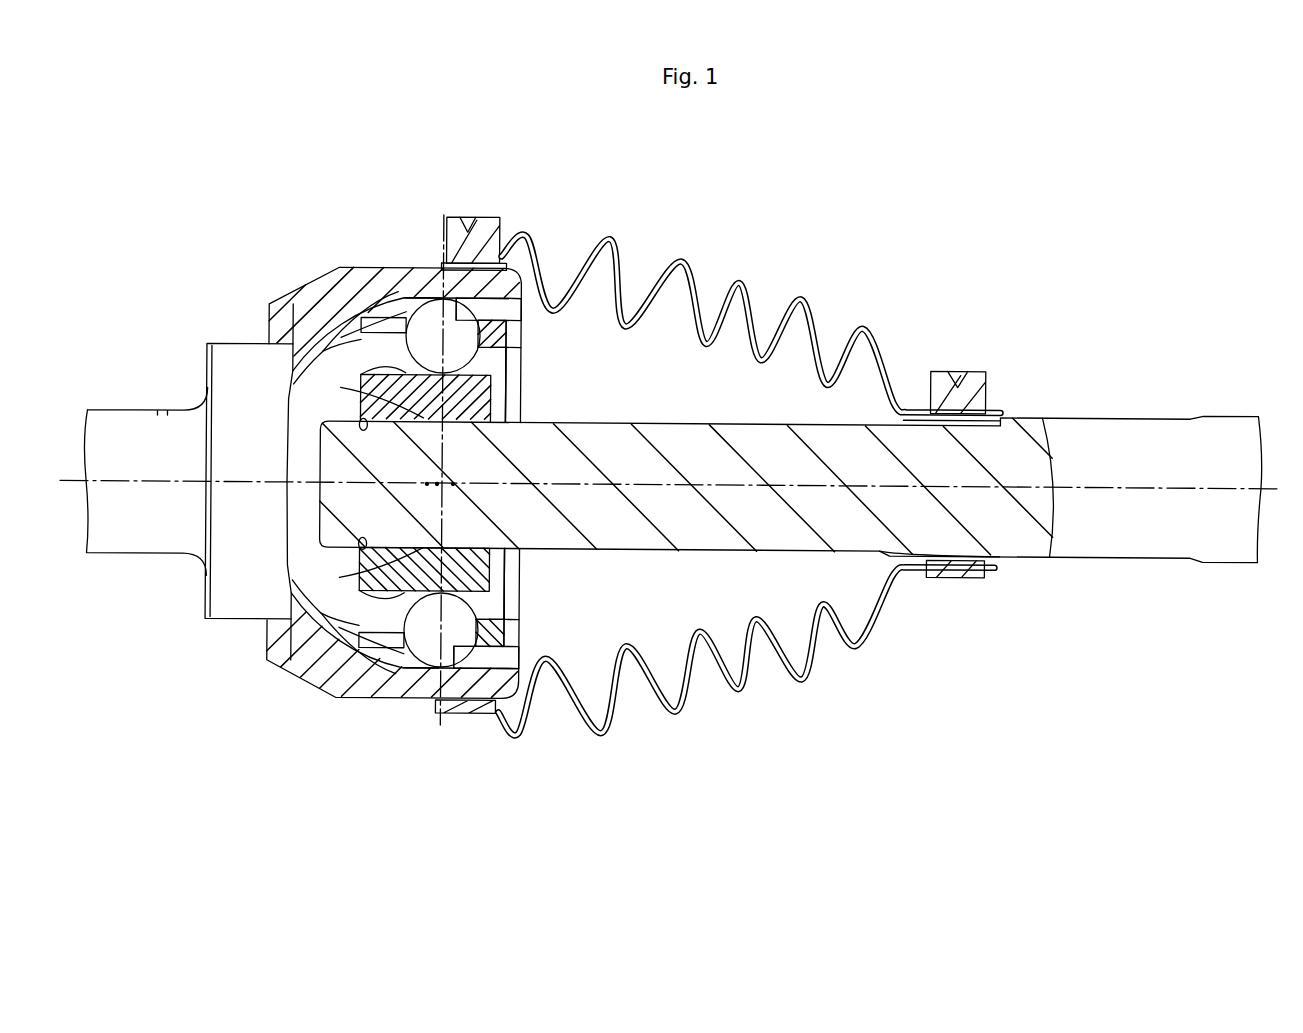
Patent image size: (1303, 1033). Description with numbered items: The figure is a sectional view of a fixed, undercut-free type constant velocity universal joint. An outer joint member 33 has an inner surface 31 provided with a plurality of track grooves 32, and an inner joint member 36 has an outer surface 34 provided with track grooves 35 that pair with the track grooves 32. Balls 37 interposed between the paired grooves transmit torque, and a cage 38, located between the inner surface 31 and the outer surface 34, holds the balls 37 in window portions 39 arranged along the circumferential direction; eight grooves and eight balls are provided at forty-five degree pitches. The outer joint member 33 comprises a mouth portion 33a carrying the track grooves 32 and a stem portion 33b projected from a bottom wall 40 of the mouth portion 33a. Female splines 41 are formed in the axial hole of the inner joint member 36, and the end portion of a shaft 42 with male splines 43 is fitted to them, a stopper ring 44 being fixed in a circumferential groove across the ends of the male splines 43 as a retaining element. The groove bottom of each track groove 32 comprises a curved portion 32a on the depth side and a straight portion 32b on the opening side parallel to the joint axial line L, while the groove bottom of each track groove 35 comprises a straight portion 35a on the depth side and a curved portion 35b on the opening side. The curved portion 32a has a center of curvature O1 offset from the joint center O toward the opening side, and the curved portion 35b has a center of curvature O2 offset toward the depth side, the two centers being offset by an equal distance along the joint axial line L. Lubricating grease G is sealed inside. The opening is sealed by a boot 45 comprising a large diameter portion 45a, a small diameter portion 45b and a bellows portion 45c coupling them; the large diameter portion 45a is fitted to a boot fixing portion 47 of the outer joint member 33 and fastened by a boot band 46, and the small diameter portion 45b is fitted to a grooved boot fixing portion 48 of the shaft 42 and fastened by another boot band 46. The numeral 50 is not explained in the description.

The inner surface 31 is at (428, 325).
The track grooves 32 is at (494, 668).
The curved portion 32a is at (348, 697).
The straight portion 32b is at (500, 714).
The outer joint member 33 is at (357, 262).
The mouth portion 33a is at (348, 268).
The stem portion 33b is at (122, 428).
The outer surface 34 is at (395, 690).
The track grooves 35 is at (500, 595).
The straight portion 35a is at (335, 560).
The curved portion 35b is at (520, 396).
The inner joint member 36 is at (518, 558).
The balls 37 is at (440, 300).
The cage 38 is at (522, 362).
The window portions 39 is at (425, 695).
The bottom wall 40 is at (232, 622).
The female splines 41 is at (372, 546).
The shaft 42 is at (812, 556).
The male splines 43 is at (335, 386).
The stopper ring 44 is at (352, 432).
The boot 45 is at (752, 275).
The large diameter portion 45a is at (448, 235).
The small diameter portion 45b is at (948, 396).
The bellows portion 45c is at (758, 673).
The boot band 46 is at (474, 252).
The boot fixing portion 47 is at (494, 260).
The boot fixing portion 48 is at (985, 445).
The seal ring 50 is at (520, 318).
The lubricating grease G is at (300, 516).
The joint axial line L is at (704, 480).
The joint center O is at (437, 485).
The center of curvature O1 is at (453, 484).
The center of curvature O2 is at (427, 484).